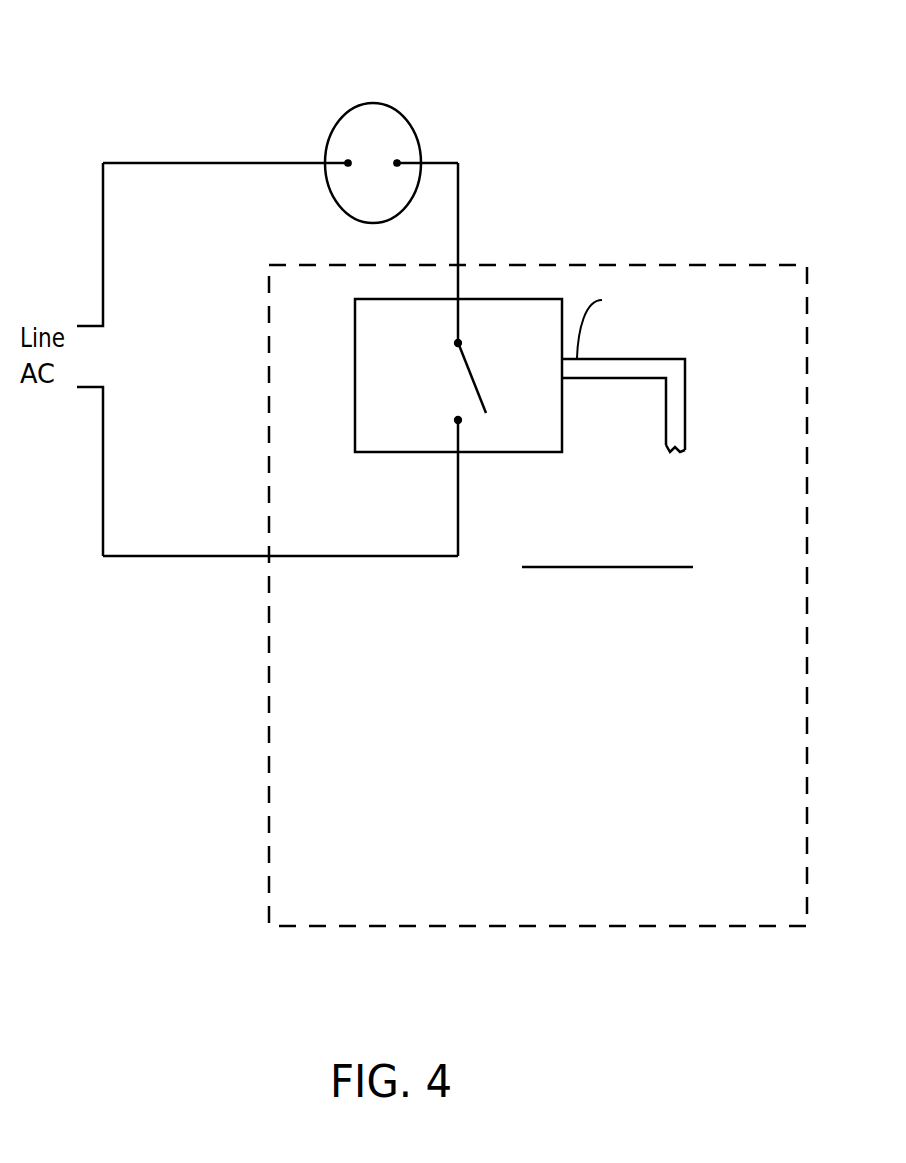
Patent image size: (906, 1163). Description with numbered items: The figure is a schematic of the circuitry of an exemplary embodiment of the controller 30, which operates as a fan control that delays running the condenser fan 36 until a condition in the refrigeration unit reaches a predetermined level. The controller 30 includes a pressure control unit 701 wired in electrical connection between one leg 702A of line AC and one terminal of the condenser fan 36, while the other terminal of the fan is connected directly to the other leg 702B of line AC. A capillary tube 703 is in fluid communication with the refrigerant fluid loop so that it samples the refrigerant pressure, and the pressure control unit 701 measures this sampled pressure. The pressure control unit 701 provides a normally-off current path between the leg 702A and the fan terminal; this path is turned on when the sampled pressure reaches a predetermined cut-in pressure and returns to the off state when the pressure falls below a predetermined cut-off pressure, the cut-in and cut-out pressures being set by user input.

The condenser fan 36 is at (407, 115).
The fan control 30 is at (452, 928).
The pressure control unit 701 is at (415, 452).
The leg of line AC 702A is at (305, 558).
The other leg of line AC 702B is at (258, 163).
The capillary tube 703 is at (687, 394).